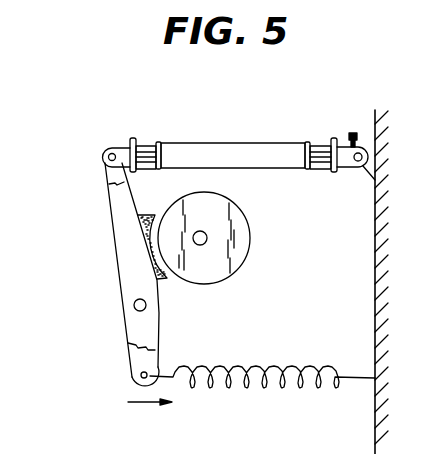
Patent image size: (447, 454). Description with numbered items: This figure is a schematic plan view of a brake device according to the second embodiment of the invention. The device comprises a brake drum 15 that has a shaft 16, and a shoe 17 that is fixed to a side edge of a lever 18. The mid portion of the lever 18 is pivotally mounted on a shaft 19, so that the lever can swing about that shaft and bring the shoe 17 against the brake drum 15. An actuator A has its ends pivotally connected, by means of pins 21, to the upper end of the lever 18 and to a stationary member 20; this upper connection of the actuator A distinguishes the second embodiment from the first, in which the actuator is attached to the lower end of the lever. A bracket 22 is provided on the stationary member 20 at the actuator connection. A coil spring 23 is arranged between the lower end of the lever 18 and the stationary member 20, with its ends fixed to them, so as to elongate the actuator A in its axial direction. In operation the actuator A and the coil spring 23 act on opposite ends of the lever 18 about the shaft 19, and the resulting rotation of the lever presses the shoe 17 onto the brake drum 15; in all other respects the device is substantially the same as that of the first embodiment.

The brake drum 15 is at (250, 230).
The shaft 16 is at (206, 242).
The shoe 17 is at (161, 288).
The lever 18 is at (107, 207).
The shaft 19 is at (134, 305).
The stationary member 20 is at (375, 310).
The pins 21 is at (106, 148).
The bracket 22 is at (364, 143).
The coil spring 23 is at (255, 384).
The actuator A is at (249, 143).